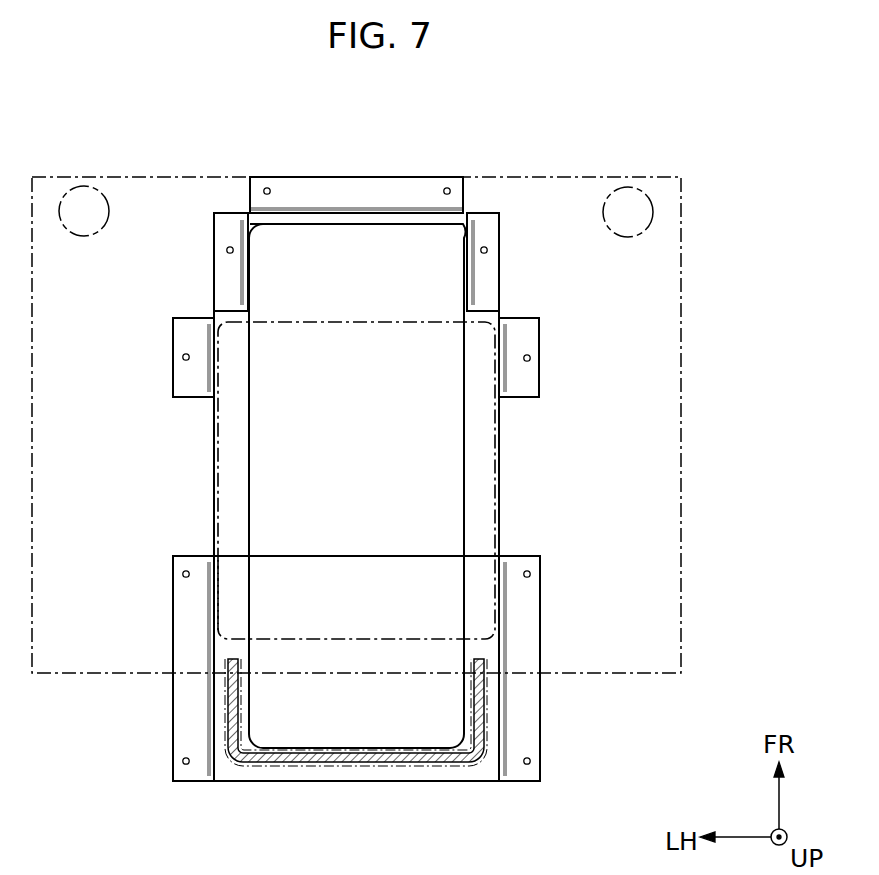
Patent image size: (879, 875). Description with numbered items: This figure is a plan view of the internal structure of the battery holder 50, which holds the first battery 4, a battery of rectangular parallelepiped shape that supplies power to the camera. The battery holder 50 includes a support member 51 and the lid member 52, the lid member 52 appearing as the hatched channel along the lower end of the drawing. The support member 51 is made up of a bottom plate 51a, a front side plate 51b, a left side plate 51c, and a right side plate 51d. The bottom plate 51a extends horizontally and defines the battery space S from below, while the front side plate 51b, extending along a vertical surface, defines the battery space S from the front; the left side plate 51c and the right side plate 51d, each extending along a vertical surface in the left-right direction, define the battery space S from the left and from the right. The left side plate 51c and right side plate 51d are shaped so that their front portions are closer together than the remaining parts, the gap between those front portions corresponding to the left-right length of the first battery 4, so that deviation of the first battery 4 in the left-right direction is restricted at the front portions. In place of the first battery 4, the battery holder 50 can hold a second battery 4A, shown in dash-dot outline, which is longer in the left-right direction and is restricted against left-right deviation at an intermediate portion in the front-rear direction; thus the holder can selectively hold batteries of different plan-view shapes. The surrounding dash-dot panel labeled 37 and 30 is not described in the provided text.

The first battery 4 is at (250, 477).
The second battery 4A is at (217, 604).
The vehicle body frame 30 is at (356, 386).
The support plate 37 is at (173, 177).
The battery holder 50 is at (366, 440).
The support member 51 is at (366, 440).
The bottom plate 51a is at (487, 470).
The front side plate 51b is at (358, 214).
The left side plate 51c is at (214, 377).
The right side plate 51d is at (497, 372).
The lid member 52 is at (353, 765).
The battery space S is at (485, 527).